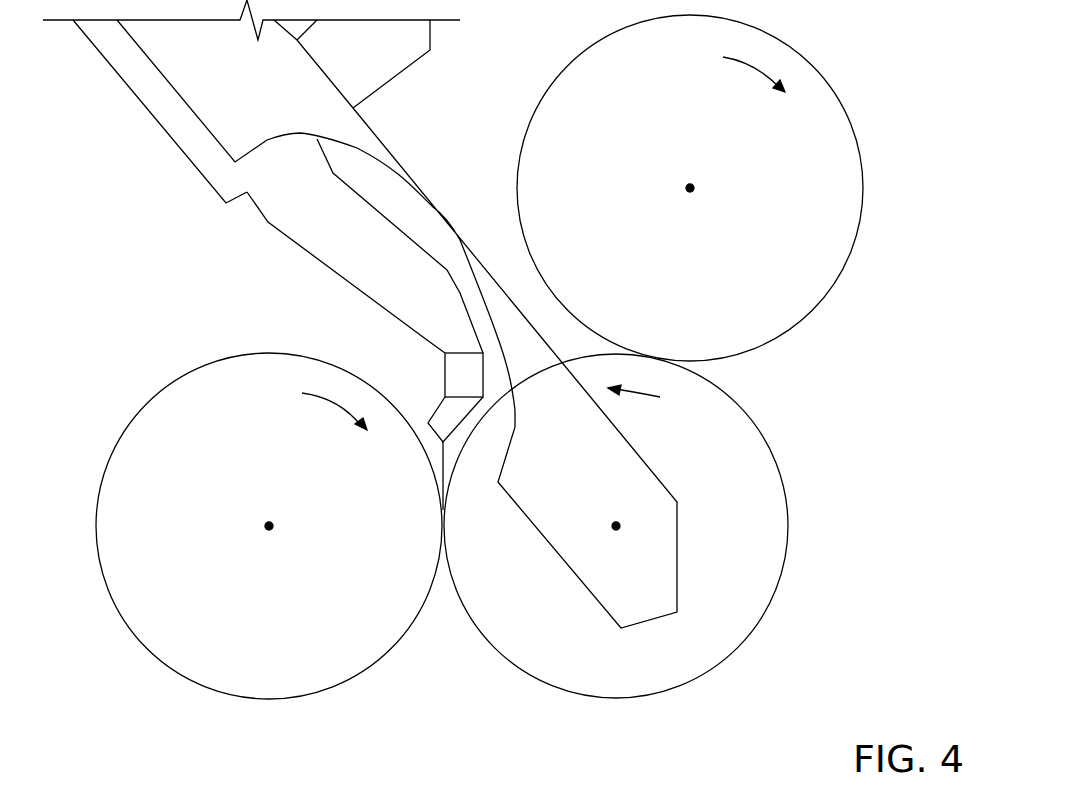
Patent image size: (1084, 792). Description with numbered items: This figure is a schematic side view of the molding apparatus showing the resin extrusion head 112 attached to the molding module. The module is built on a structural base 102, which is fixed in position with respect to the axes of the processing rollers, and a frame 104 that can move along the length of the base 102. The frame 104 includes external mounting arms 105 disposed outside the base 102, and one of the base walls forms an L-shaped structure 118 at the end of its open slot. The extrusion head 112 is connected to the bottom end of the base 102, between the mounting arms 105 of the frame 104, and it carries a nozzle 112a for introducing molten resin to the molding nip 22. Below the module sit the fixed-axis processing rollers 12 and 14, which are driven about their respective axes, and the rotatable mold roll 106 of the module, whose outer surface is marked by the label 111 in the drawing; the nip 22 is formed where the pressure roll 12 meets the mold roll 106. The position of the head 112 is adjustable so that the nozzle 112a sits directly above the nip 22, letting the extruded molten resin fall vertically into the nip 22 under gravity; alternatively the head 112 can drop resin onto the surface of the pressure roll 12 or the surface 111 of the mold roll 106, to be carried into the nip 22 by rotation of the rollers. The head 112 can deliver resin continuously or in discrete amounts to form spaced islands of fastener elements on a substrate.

The processing roller 12 is at (150, 632).
The processing roller 14 is at (840, 135).
The molding nip 22 is at (441, 625).
The base 102 is at (128, 70).
The frame 104 is at (233, 107).
The mounting arm 105 is at (360, 142).
The rotatable roller 106 is at (758, 592).
The roller surface 111 is at (623, 702).
The resin extrusion head 112 is at (320, 245).
The nozzle 112a is at (437, 407).
The L-shaped structure 118 is at (403, 58).